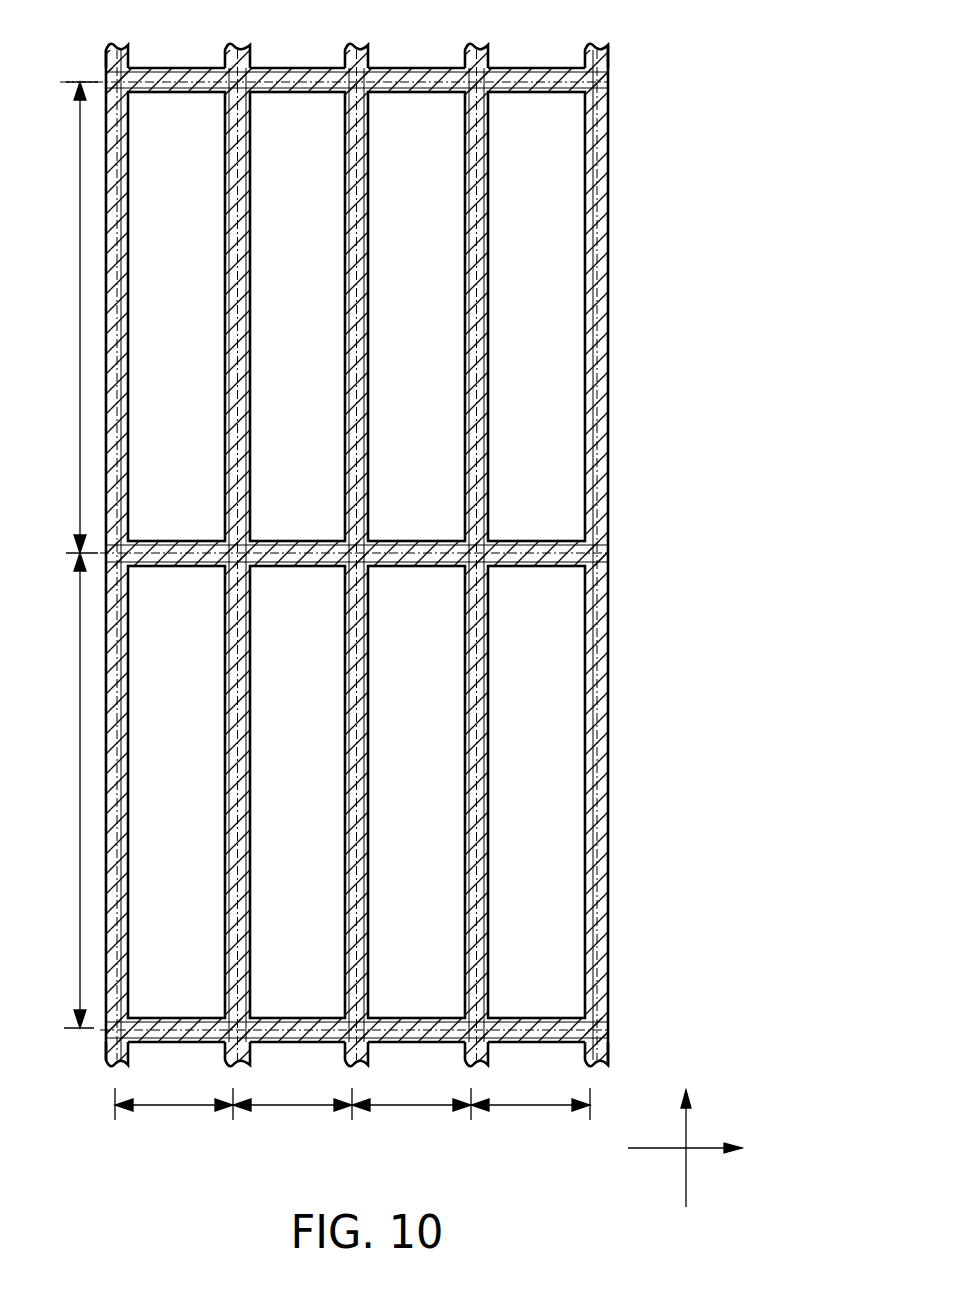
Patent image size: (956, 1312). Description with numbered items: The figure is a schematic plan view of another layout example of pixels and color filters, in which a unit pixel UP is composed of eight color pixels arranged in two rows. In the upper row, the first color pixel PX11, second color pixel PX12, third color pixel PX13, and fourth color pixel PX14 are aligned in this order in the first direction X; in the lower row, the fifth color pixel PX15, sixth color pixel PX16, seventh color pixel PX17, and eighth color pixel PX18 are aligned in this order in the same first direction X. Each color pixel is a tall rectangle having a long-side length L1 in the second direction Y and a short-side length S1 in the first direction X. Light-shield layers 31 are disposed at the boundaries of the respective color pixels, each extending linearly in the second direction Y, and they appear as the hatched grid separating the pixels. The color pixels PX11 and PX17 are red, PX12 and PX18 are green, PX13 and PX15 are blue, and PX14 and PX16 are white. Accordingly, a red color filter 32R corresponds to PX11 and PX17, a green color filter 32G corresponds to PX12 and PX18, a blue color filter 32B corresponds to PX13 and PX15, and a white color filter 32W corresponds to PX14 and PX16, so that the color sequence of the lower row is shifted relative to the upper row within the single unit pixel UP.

The light-shield layer 31 is at (113, 46).
The red color filter 32R is at (177, 81).
The green color filter 32G is at (295, 81).
The blue color filter 32B is at (412, 81).
The white color filter 32W is at (535, 81).
The unit pixel UP is at (603, 86).
The first color pixel PX11 is at (176, 316).
The second color pixel PX12 is at (297, 316).
The third color pixel PX13 is at (416, 316).
The fourth color pixel PX14 is at (536, 316).
The fifth color pixel PX15 is at (176, 792).
The sixth color pixel PX16 is at (297, 792).
The seventh color pixel PX17 is at (416, 792).
The eighth color pixel PX18 is at (536, 792).
The long-side length L1 is at (78, 326).
The short-side length S1 is at (172, 1108).
The first direction X is at (695, 1148).
The second direction Y is at (686, 1130).